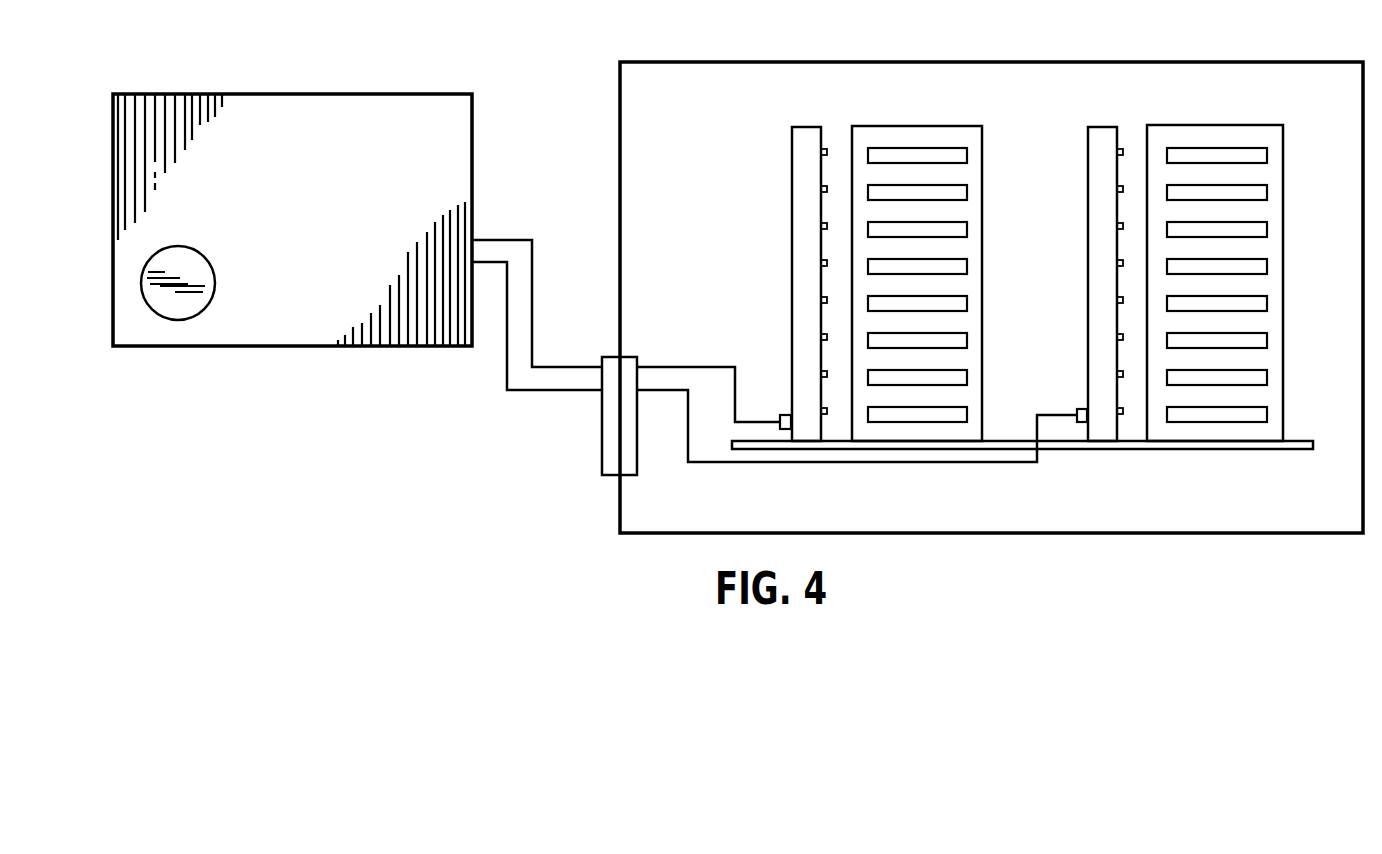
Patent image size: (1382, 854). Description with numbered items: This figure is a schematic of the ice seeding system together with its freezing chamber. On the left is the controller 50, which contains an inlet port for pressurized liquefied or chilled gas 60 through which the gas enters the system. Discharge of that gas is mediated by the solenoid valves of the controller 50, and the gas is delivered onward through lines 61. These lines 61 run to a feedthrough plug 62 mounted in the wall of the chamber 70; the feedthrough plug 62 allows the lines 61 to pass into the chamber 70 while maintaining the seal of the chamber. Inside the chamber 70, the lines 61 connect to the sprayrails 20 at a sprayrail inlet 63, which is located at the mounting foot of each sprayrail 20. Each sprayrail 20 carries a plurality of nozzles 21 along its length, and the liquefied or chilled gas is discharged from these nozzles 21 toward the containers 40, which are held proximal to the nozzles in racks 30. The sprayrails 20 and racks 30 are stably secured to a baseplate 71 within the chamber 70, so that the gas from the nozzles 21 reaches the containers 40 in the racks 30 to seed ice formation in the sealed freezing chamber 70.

The sprayrail 20 is at (810, 135).
The nozzle 21 is at (828, 150).
The rack 30 is at (980, 135).
The container 40 is at (965, 152).
The controller 50 is at (300, 100).
The inlet port for pressurized liquefied or chilled gas 60 is at (150, 285).
The lines 61 is at (532, 333).
The feedthrough plug 62 is at (605, 457).
The sprayrail inlet 63 is at (785, 415).
The chamber 70 is at (700, 68).
The baseplate 71 is at (1168, 450).